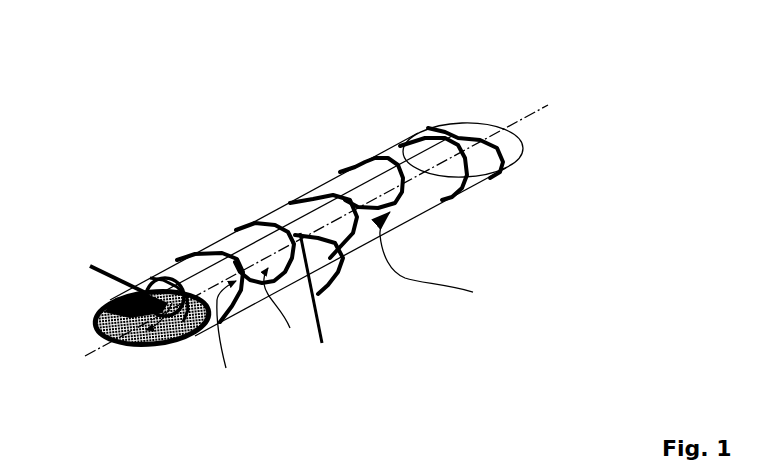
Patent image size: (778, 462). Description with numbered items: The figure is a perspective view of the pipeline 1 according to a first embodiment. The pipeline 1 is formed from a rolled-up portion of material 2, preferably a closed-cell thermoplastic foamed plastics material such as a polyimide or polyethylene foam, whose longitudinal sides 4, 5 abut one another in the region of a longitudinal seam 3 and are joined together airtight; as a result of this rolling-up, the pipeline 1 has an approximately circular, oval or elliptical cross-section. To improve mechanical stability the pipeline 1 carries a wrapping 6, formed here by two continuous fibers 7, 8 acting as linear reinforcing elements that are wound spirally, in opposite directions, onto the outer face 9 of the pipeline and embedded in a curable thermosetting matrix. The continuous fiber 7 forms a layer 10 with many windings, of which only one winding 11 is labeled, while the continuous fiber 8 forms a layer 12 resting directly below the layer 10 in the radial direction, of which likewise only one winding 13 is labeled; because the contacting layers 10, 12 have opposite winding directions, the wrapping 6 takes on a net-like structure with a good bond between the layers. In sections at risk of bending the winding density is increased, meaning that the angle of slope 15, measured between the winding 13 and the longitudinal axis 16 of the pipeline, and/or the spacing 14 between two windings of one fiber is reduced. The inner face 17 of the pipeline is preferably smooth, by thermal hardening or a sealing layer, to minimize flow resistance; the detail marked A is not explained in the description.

The pipeline 1 is at (204, 90).
The portion of material 2 is at (170, 345).
The longitudinal seam 3 is at (183, 276).
The longitudinal side 4 is at (448, 126).
The longitudinal side 5 is at (489, 126).
The wrapping 6 is at (309, 150).
The continuous fiber 7 is at (192, 254).
The continuous fiber 8 is at (293, 227).
The outer face 9 is at (388, 104).
The layer 10 is at (509, 146).
The winding 11 is at (284, 308).
The layer 12 is at (228, 336).
The winding 13 is at (287, 220).
The spacing 14 is at (438, 258).
The angle of slope 15 is at (340, 277).
The longitudinal axis 16 is at (536, 108).
The inner face 17 is at (119, 345).
The cross-section detail A is at (126, 282).